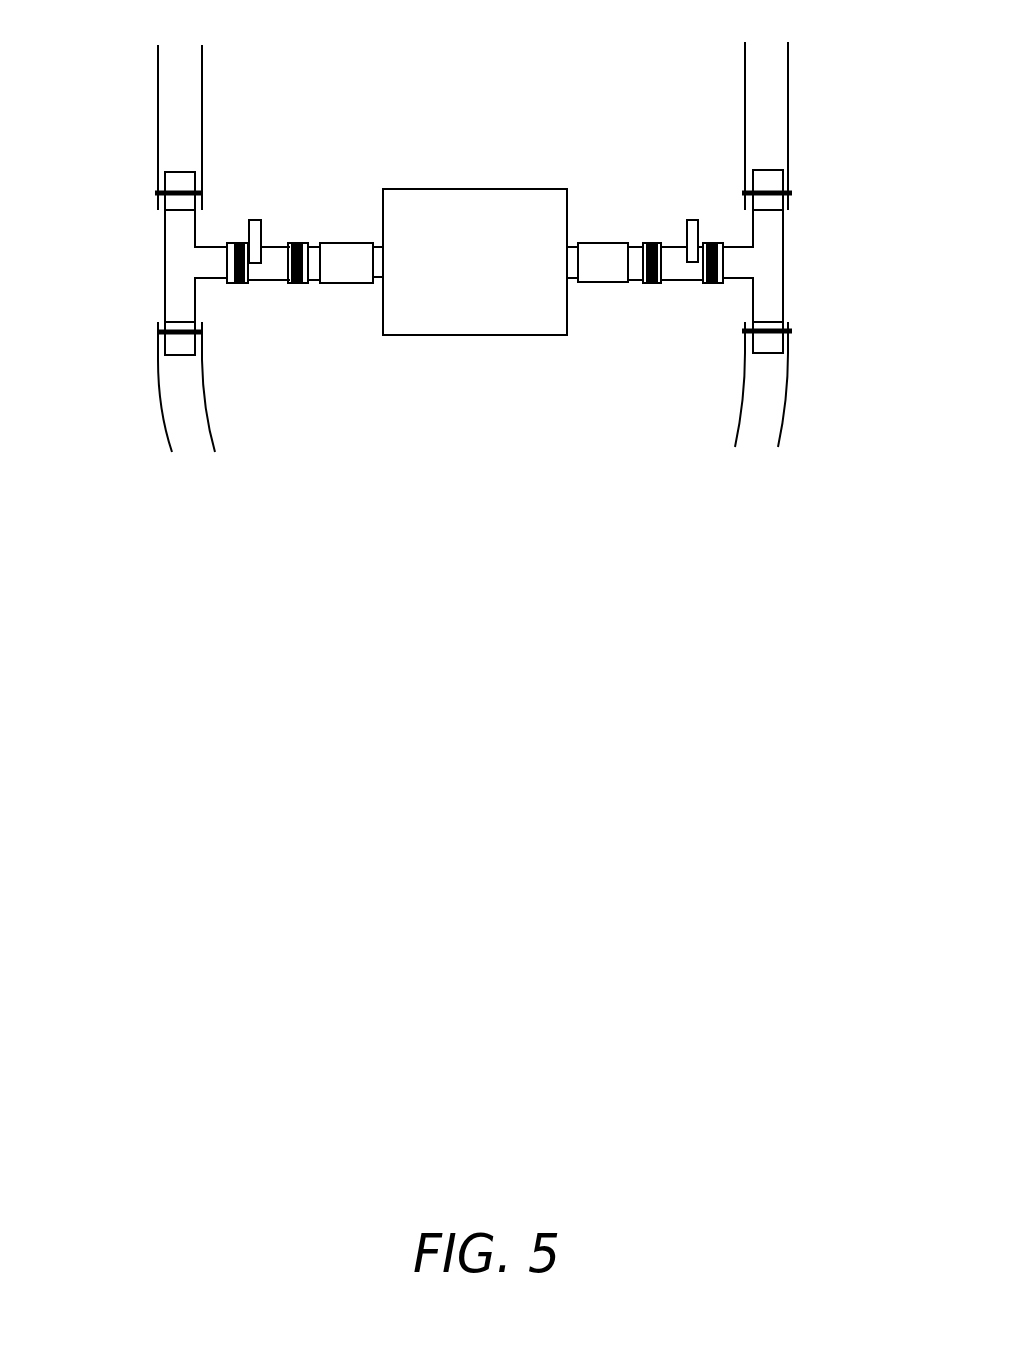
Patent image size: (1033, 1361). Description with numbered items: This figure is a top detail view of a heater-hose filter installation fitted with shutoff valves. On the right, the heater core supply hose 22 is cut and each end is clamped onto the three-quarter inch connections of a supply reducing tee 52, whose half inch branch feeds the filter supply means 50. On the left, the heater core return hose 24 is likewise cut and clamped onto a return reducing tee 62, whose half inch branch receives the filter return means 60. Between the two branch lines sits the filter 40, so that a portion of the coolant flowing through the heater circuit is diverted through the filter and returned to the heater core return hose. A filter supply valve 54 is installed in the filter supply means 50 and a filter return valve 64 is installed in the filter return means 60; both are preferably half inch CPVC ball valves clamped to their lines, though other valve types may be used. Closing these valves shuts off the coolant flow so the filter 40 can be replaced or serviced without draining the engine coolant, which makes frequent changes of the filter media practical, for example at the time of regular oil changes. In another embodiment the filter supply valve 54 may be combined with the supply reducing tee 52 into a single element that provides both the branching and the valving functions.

The heater core supply hose 22 is at (773, 92).
The heater core return hose 24 is at (178, 95).
The filter 40 is at (463, 220).
The filter supply means 50 is at (603, 250).
The supply reducing tee 52 is at (775, 237).
The filter supply valve 54 is at (677, 273).
The filter return means 60 is at (335, 272).
The return reducing tee 62 is at (168, 242).
The filter return valve 64 is at (271, 247).